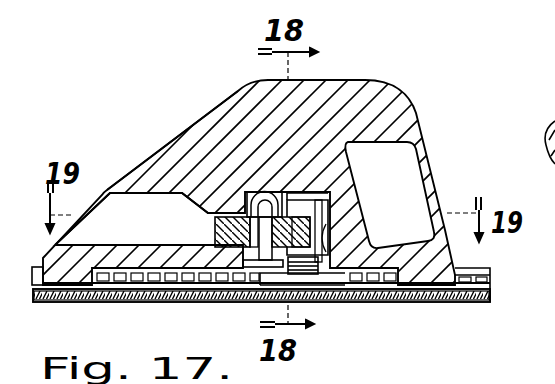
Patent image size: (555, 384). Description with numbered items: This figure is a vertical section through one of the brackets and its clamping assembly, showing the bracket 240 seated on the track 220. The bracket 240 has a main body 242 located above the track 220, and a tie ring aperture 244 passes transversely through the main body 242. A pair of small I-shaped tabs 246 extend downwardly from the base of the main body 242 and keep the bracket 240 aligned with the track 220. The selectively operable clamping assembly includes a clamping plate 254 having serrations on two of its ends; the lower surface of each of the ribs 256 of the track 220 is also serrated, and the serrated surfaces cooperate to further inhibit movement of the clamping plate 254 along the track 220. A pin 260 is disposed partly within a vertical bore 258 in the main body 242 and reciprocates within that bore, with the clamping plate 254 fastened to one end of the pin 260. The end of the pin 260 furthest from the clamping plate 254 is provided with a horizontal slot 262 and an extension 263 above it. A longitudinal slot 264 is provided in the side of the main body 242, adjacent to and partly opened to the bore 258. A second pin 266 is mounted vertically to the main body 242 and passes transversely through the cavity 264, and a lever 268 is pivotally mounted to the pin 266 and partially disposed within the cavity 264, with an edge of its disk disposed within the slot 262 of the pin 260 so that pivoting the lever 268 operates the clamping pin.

The track 220 is at (490, 289).
The bracket 240 is at (394, 87).
The main body 242 is at (254, 101).
The tie ring aperture 244 is at (420, 247).
The I-shaped tabs 246 is at (50, 303).
The clamping plate 254 is at (338, 284).
The ribs 256 is at (477, 268).
The vertical bore 258 is at (340, 282).
The pin 260 is at (312, 221).
The horizontal slot 262 is at (322, 196).
The extension 263 is at (300, 212).
The longitudinal slot 264 is at (109, 195).
The pin 266 is at (215, 230).
The lever 268 is at (144, 233).